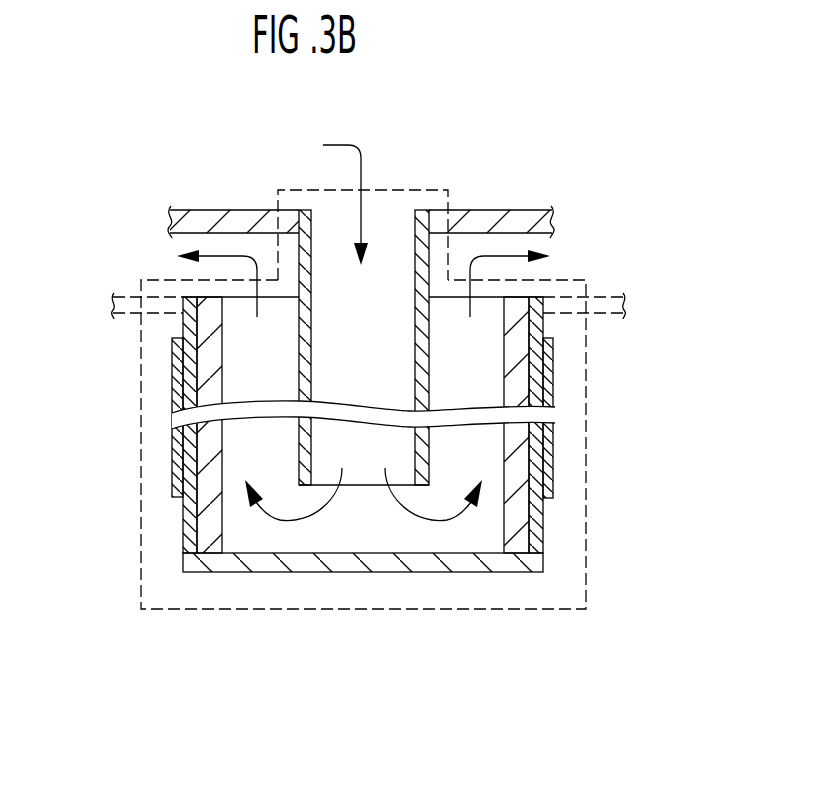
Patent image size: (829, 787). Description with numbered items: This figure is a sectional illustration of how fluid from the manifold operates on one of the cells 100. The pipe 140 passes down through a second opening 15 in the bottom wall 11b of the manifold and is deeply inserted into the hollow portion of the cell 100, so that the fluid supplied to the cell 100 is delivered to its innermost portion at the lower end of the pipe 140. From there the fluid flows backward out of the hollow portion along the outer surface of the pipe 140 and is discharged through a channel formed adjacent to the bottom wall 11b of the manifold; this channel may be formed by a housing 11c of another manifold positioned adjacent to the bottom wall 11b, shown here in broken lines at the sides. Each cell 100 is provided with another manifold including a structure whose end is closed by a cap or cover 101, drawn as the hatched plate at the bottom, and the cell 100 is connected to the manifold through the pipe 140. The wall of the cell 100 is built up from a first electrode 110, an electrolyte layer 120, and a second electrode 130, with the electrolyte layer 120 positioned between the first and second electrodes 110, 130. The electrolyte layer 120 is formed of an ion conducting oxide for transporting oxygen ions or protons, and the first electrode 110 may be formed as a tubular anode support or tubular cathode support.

The bottom wall 11b is at (507, 222).
The housing 11c is at (602, 297).
The second opening 15 is at (387, 230).
The cell 100 is at (586, 475).
The cap or cover 101 is at (347, 560).
The first electrode 110 is at (206, 543).
The electrolyte layer 120 is at (187, 527).
The second electrode 130 is at (178, 482).
The pipe 140 is at (300, 358).